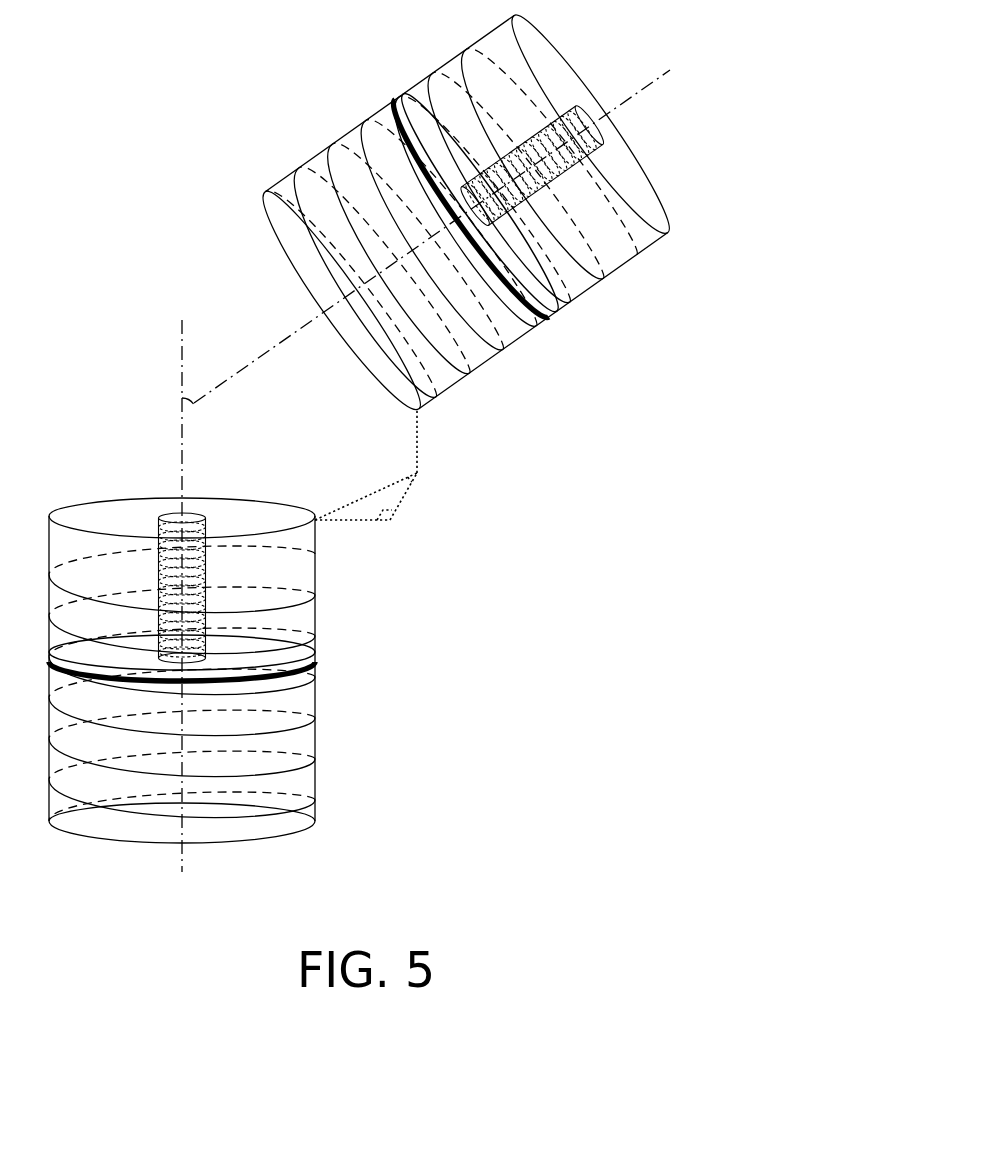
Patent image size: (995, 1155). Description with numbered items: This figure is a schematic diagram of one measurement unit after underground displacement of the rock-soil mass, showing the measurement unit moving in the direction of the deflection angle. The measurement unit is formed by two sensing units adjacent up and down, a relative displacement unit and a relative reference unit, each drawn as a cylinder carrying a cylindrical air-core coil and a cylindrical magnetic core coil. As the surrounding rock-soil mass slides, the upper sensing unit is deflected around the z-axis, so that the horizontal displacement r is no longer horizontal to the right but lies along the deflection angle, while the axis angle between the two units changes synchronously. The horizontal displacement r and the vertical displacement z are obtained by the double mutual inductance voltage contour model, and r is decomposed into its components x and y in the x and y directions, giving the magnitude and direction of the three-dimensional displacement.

The horizontal displacement component in the x direction x is at (353, 530).
The horizontal displacement component in the y direction y is at (410, 496).
The vertical displacement z is at (431, 440).
The horizontal displacement r is at (366, 496).